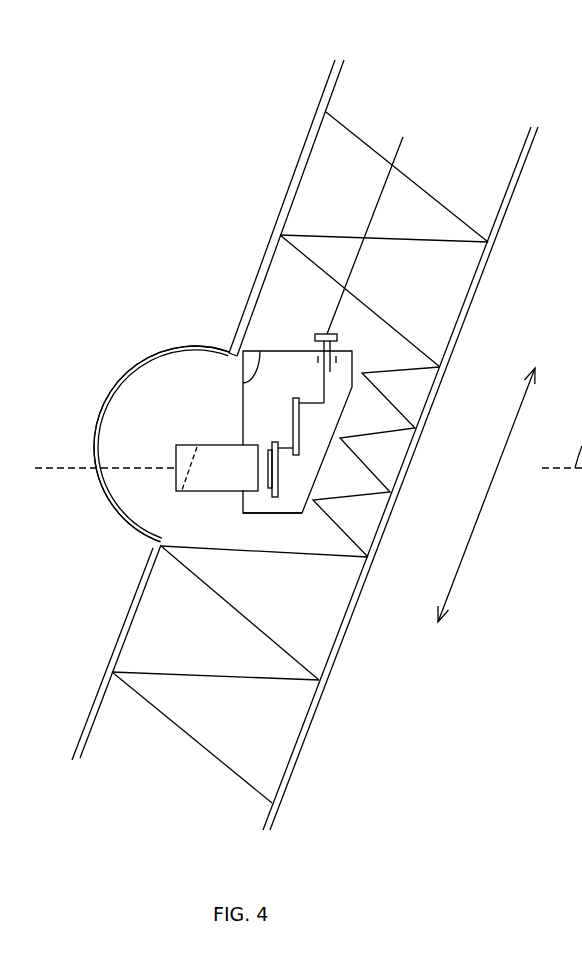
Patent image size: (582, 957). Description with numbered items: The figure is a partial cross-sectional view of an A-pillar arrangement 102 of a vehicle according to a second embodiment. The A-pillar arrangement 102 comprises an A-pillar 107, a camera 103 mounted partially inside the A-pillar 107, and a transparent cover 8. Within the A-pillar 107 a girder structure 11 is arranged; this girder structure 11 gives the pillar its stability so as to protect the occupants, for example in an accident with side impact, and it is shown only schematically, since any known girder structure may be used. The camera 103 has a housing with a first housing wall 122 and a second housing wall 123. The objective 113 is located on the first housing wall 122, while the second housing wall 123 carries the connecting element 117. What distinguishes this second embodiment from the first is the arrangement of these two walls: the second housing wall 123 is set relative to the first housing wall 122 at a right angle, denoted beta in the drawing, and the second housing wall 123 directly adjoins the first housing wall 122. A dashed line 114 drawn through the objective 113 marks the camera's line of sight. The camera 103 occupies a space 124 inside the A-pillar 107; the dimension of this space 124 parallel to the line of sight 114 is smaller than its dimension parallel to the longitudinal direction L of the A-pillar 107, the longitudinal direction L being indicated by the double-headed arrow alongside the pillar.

The A-pillar arrangement 102 is at (98, 73).
The A-pillar 107 is at (315, 117).
The girder structure 11 is at (362, 140).
The connecting element 117 is at (384, 373).
The first housing wall 122 is at (243, 385).
The transparent cover 8 is at (94, 454).
The camera 103 is at (258, 352).
The second housing wall 123 is at (302, 351).
The objective 113 is at (202, 491).
The axis line 114 is at (42, 470).
The space 124 is at (273, 513).
The longitudinal direction L is at (480, 518).